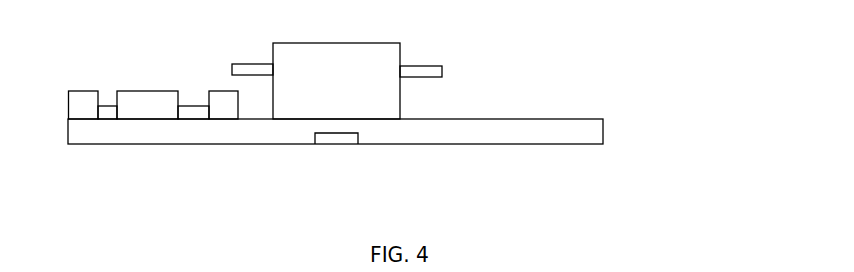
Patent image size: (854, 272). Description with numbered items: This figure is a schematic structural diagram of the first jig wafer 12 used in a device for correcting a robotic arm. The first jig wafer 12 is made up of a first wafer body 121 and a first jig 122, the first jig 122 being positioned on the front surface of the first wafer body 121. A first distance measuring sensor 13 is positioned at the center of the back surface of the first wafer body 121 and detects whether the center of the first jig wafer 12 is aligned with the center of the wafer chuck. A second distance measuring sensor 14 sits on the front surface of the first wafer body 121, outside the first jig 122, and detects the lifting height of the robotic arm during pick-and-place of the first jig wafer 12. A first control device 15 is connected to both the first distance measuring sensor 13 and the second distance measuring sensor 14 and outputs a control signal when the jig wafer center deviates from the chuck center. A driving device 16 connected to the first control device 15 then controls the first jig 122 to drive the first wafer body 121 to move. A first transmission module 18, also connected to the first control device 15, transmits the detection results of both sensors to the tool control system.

The first jig wafer 12 is at (702, 18).
The first wafer body 121 is at (603, 130).
The first jig 122 is at (400, 63).
The first distance measuring sensor 13 is at (358, 136).
The second distance measuring sensor 14 is at (232, 66).
The first control device 15 is at (145, 91).
The driving device 16 is at (224, 91).
The first transmission module 18 is at (90, 91).